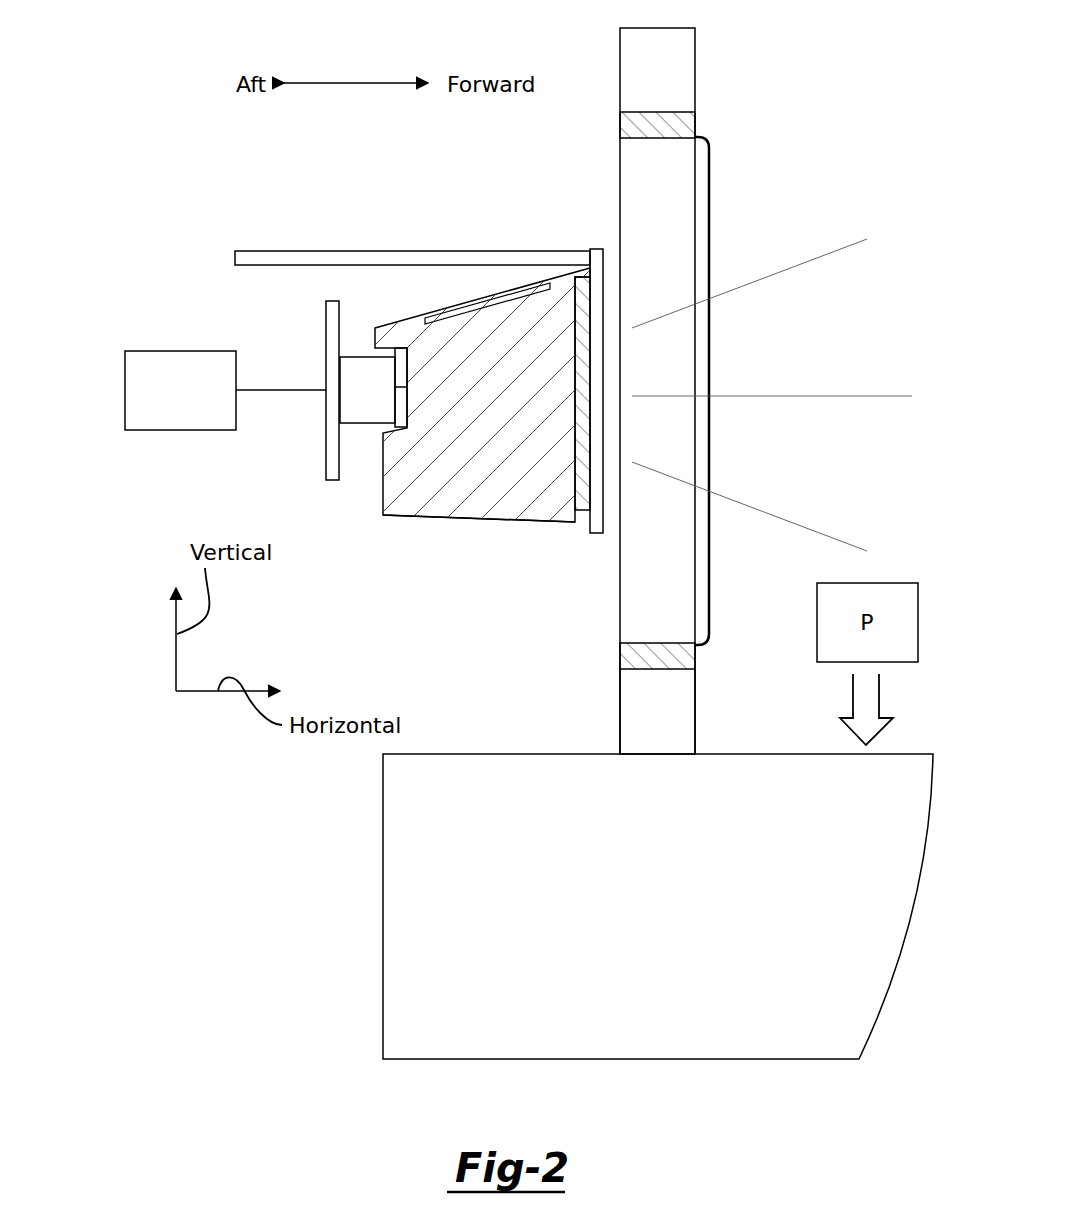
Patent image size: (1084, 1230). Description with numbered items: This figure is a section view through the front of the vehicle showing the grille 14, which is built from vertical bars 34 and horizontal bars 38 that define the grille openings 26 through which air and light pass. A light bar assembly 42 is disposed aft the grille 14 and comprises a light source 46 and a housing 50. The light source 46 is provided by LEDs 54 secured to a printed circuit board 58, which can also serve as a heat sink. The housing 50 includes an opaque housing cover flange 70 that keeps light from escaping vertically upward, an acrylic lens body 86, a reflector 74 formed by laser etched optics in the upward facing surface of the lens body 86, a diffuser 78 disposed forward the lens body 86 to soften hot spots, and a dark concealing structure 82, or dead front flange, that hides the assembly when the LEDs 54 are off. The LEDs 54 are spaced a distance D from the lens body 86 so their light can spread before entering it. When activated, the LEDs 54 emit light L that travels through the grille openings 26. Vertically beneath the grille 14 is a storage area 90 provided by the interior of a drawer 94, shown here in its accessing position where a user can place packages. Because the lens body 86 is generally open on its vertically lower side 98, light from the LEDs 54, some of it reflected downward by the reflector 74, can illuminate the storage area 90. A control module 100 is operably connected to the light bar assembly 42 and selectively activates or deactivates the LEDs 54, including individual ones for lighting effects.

The grille 14 is at (748, 100).
The grille openings 26 is at (802, 350).
The vertical bars 34 is at (698, 727).
The horizontal bars 38 is at (698, 658).
The light bar assembly 42 is at (393, 203).
The light source 46 is at (312, 486).
The housing 50 is at (567, 244).
The Light Emitting Diodes (LEDs) 54 is at (350, 404).
The printed circuit board 58 is at (326, 327).
The housing cover flange 70 is at (317, 251).
The reflector 74 is at (515, 297).
The diffuser 78 is at (552, 480).
The concealing structure 82 is at (600, 512).
The lens body 86 is at (418, 497).
The storage area 90 is at (508, 728).
The drawer 94 is at (410, 903).
The vertically lower side 98 is at (482, 523).
The control module 100 is at (124, 386).
The distance D is at (400, 385).
The light L is at (903, 396).